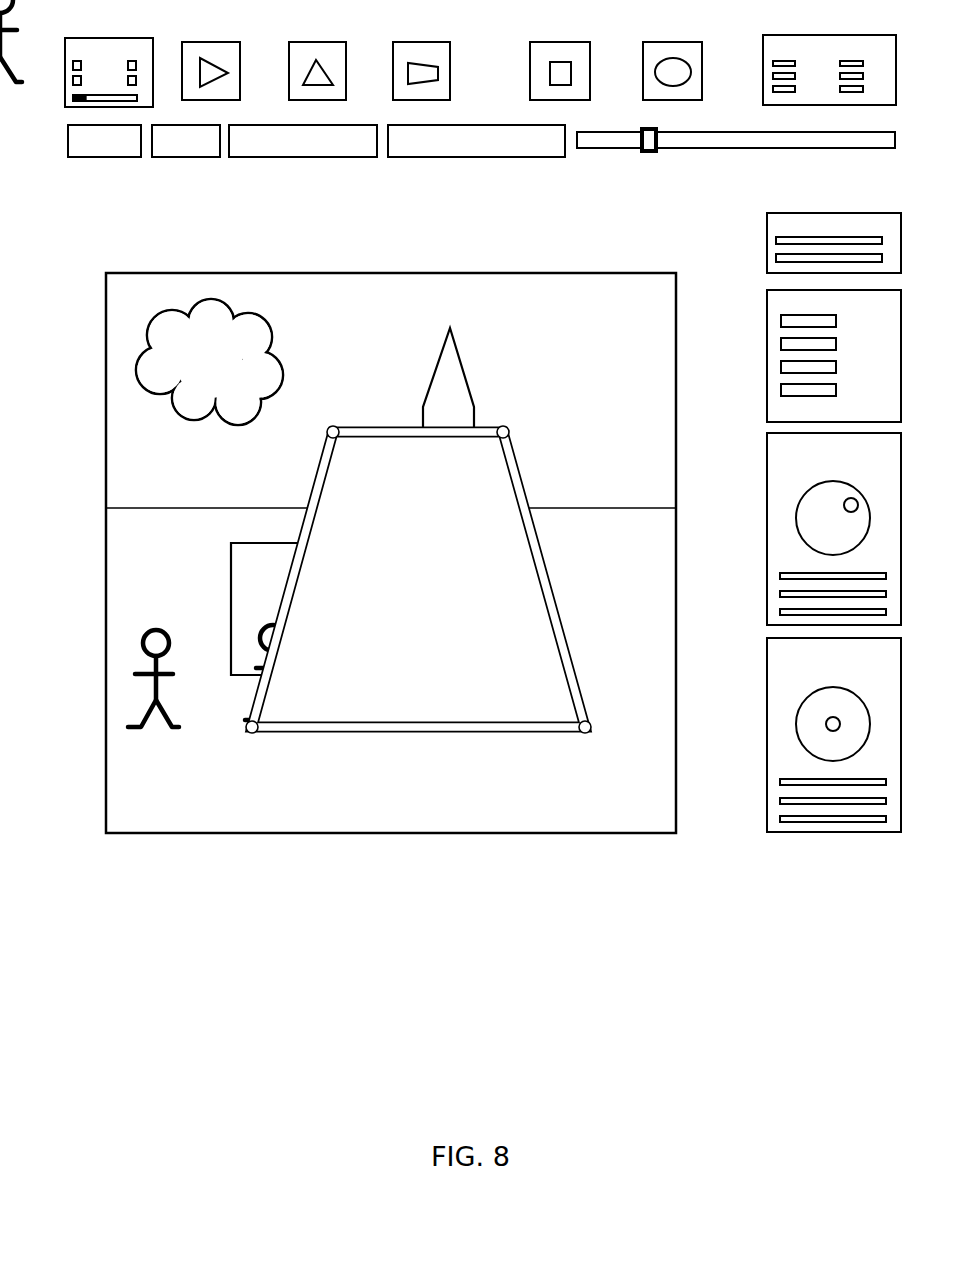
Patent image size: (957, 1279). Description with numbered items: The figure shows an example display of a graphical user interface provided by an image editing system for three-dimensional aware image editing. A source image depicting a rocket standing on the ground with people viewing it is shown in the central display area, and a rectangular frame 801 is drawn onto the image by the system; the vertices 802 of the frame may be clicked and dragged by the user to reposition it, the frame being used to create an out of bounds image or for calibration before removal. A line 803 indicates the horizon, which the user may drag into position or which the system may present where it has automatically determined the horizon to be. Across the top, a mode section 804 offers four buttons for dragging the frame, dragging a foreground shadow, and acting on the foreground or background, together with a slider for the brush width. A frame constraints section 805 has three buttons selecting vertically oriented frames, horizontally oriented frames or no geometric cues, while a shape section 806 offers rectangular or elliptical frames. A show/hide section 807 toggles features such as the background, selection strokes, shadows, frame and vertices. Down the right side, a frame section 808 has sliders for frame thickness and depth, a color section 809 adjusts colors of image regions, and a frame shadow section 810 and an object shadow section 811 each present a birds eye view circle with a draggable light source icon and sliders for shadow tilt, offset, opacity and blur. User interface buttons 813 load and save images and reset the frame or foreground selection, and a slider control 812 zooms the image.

The rectangular frame 801 is at (528, 489).
The vertices 802 is at (510, 426).
The line 803 is at (661, 508).
The mode section 804 is at (72, 38).
The frame constraints section 805 is at (310, 42).
The shape section 806 is at (662, 42).
The show/hide section 807 is at (780, 35).
The frame section 808 is at (767, 220).
The color section 809 is at (767, 320).
The frame shadow section 810 is at (767, 450).
The object shadow section 811 is at (767, 674).
The slider control 812 is at (845, 148).
The user interface buttons 813 is at (183, 157).